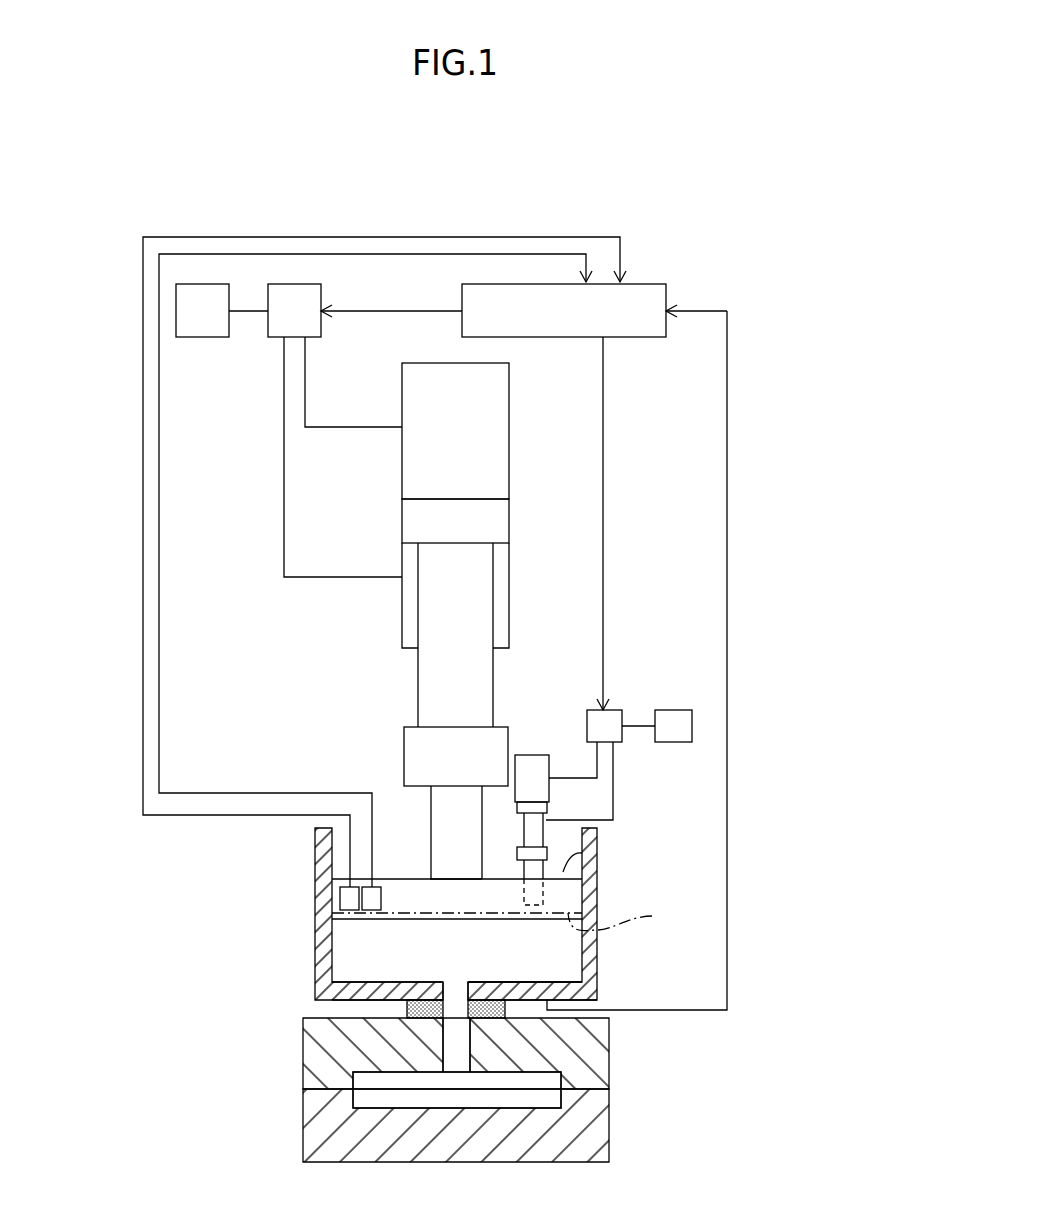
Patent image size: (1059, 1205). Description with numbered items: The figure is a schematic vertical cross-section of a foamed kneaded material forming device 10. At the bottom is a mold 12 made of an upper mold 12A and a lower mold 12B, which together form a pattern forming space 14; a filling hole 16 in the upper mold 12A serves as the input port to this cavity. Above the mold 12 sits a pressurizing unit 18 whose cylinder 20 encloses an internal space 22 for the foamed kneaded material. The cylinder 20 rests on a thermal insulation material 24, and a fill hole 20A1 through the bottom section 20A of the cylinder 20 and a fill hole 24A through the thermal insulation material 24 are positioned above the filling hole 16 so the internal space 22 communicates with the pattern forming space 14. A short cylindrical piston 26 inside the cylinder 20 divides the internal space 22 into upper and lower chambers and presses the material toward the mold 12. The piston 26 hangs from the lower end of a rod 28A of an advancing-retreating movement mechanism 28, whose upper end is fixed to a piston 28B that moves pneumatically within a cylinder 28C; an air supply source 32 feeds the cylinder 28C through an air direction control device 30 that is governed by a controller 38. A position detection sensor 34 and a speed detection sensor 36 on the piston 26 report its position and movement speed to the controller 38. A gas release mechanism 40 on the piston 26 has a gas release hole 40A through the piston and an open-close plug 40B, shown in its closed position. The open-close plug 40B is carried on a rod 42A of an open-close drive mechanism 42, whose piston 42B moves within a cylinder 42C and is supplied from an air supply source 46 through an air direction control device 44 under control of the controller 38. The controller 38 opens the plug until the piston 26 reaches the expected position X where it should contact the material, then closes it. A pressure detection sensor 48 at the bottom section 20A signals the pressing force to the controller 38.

The foamed kneaded material forming device 10 is at (718, 126).
The mold 12 is at (511, 1090).
The upper mold 12A is at (609, 1053).
The lower mold 12B is at (609, 1123).
The pattern forming space 14 is at (469, 1102).
The filling hole 16 is at (452, 1024).
The pressurizing unit 18 is at (195, 935).
The cylinder 20 is at (313, 930).
The bottom section 20A is at (361, 980).
The fill hole 20A1 is at (462, 982).
The internal space 22 is at (434, 973).
The thermal insulation material 24 is at (407, 1012).
The fill hole 24A is at (453, 1018).
The piston 26 is at (582, 853).
The advancing-retreating movement mechanism 28 is at (434, 621).
The rod 28A is at (425, 800).
The piston 28B is at (497, 521).
The cylinder 28C is at (509, 435).
The air direction control device 30 is at (268, 327).
The air supply source 32 is at (201, 337).
The position detection sensor 34 is at (381, 897).
The speed detection sensor 36 is at (340, 897).
The controller 38 is at (640, 284).
The gas release mechanism 40 is at (525, 859).
The gas release hole 40A is at (525, 893).
The open-close plug 40B is at (526, 887).
The open-close drive mechanism 42 is at (589, 783).
The rod 42A is at (548, 845).
The piston 42B is at (534, 806).
The cylinder 42C is at (549, 766).
The air direction control device 44 is at (614, 710).
The air supply source 46 is at (672, 710).
The pressure detection sensor 48 is at (598, 991).
The expected position X is at (620, 919).